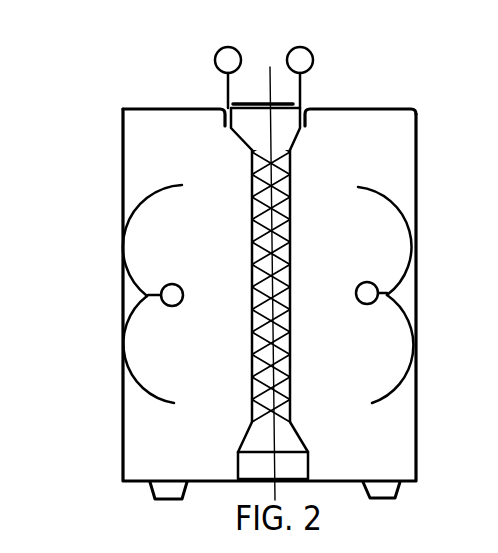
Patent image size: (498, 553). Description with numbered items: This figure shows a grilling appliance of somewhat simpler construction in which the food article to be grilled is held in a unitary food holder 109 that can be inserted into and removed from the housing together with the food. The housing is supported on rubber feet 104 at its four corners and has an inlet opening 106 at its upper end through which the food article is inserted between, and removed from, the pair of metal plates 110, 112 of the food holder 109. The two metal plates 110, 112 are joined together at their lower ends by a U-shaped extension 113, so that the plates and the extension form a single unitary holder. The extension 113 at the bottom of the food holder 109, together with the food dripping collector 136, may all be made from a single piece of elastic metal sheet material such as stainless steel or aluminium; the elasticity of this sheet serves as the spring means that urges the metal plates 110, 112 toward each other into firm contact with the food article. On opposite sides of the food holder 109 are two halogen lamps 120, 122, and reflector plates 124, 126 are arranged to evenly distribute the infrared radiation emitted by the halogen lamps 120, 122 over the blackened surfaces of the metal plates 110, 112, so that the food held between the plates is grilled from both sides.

The rubber feet 104 is at (151, 488).
The inlet opening 106 is at (285, 104).
The food holder 109 is at (224, 126).
The metal plate 110 is at (250, 181).
The metal plate 112 is at (292, 237).
The U-shaped extension 113 is at (303, 440).
The food dripping collector 136 is at (310, 465).
The reflector plate 124 is at (126, 232).
The reflector plate 126 is at (410, 376).
The halogen lamp 120 is at (165, 285).
The halogen lamp 122 is at (376, 284).